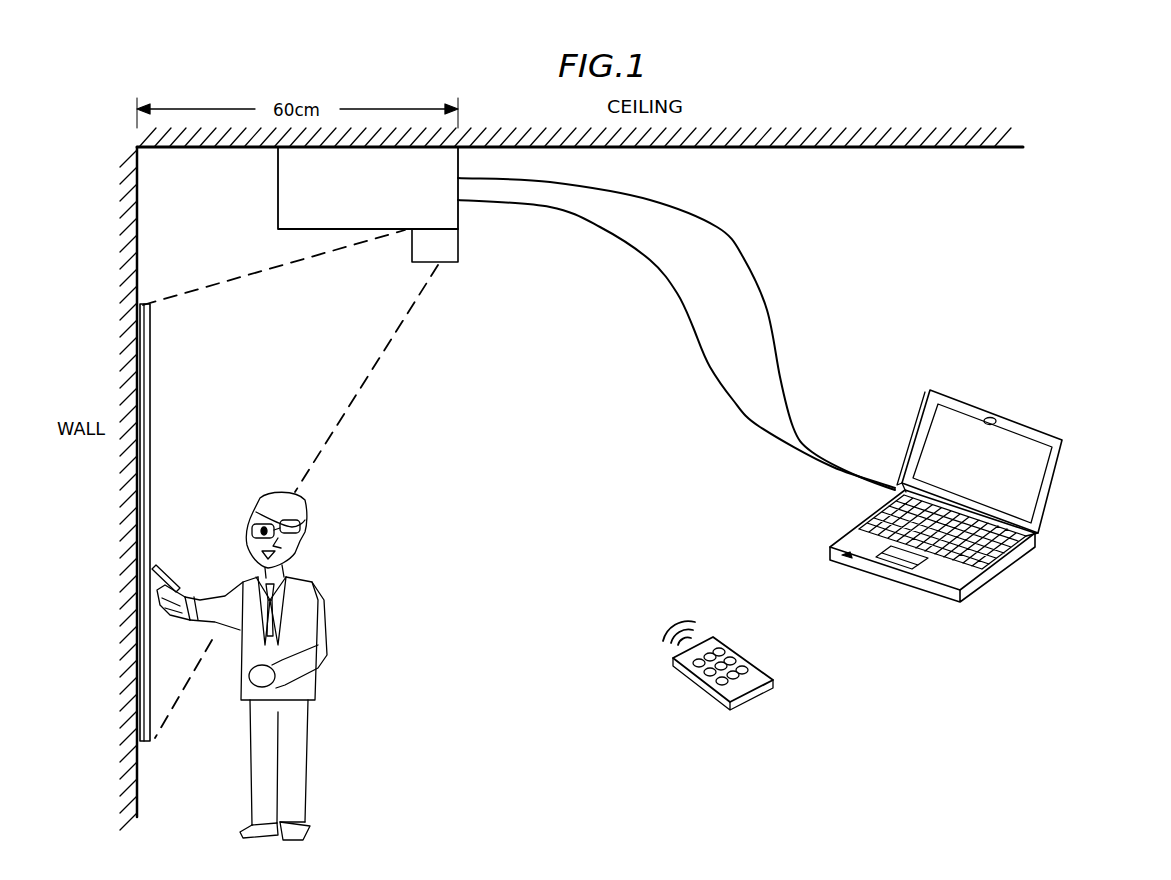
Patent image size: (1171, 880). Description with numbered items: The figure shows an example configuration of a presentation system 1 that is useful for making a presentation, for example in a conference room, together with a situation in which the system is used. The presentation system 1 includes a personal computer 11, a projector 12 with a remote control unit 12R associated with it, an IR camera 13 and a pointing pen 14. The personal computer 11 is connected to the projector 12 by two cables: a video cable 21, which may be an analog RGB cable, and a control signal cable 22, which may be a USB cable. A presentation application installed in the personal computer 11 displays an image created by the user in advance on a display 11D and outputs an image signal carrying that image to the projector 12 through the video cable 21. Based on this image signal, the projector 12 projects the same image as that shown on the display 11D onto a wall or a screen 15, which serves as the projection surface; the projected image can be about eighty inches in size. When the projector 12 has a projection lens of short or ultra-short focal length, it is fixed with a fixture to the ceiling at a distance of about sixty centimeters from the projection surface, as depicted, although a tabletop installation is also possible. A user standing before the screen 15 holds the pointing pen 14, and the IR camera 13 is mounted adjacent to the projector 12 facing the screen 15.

The presentation system 1 is at (602, 801).
The personal computer 11 is at (980, 491).
The display 11D is at (1020, 487).
The projector 12 is at (278, 197).
The remote control unit 12R is at (775, 685).
The IR camera 13 is at (459, 246).
The pointing pen 14 is at (170, 577).
The screen 15 is at (151, 352).
The video cable 21 is at (745, 258).
The control signal cable 22 is at (675, 302).